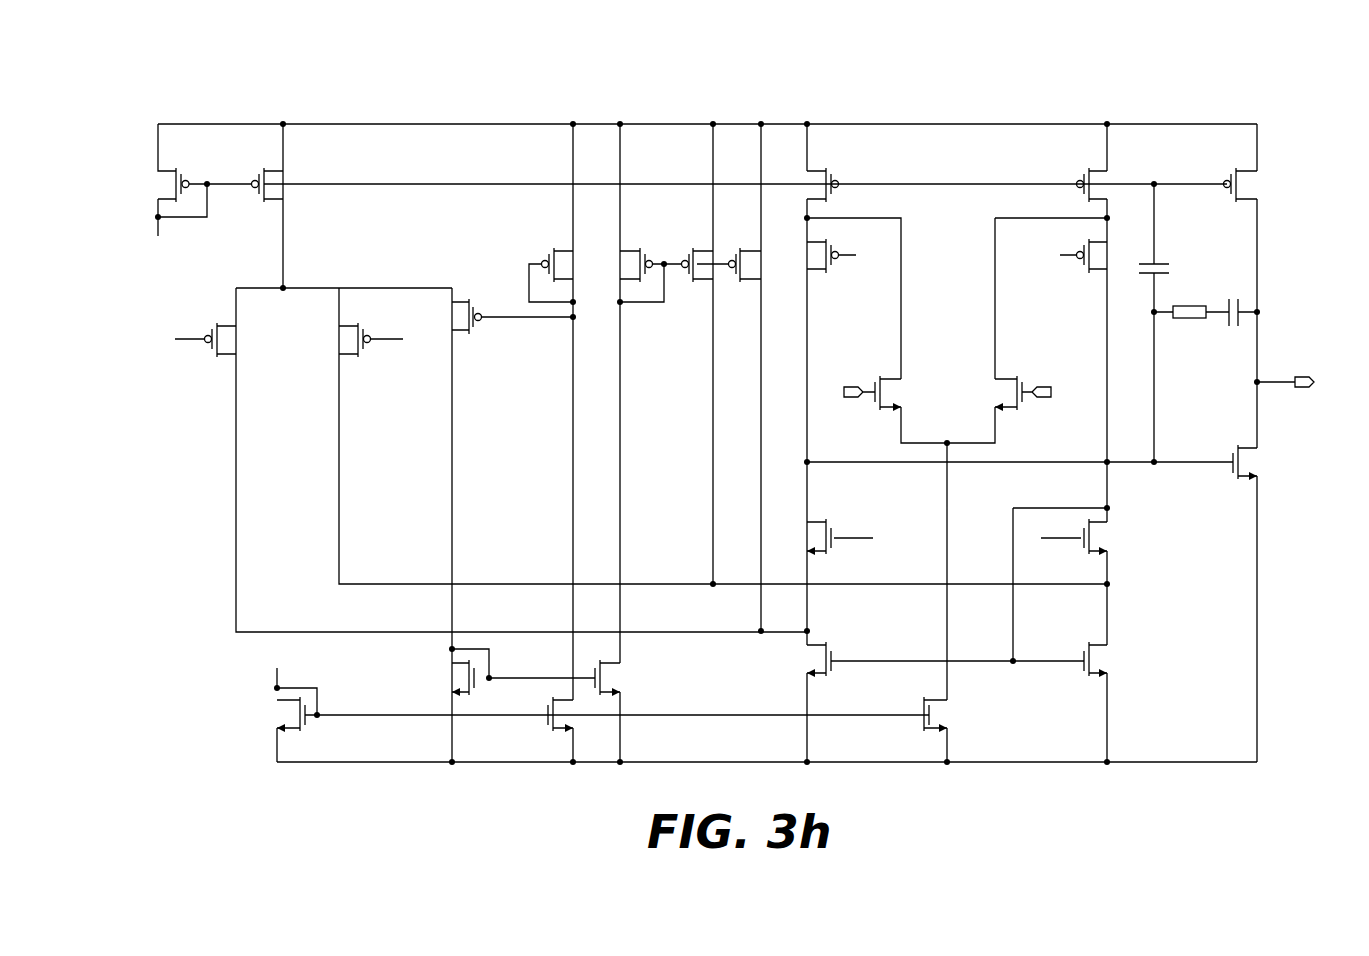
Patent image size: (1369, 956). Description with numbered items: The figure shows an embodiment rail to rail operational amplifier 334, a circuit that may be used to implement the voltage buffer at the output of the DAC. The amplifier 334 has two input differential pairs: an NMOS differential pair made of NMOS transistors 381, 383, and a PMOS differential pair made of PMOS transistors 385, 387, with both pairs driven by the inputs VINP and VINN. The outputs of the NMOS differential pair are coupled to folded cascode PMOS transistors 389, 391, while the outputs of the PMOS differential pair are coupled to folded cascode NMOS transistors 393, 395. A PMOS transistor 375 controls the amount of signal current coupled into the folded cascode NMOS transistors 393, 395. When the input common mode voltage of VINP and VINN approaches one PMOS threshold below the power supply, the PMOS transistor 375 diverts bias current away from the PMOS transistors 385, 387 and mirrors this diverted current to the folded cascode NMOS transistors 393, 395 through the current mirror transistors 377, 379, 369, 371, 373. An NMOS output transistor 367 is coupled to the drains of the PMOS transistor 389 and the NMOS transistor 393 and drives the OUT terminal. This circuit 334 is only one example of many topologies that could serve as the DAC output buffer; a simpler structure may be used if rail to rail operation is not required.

The rail to rail operational amplifier 334 is at (108, 52).
The NMOS output transistor 367 is at (1253, 462).
The current mirror transistor 369 is at (625, 266).
The current mirror transistor 371 is at (701, 250).
The current mirror transistor 373 is at (753, 250).
The PMOS transistor 375 is at (462, 338).
The current mirror transistor 377 is at (450, 688).
The current mirror transistor 379 is at (617, 681).
The NMOS transistor 381 is at (898, 392).
The NMOS transistor 383 is at (1000, 378).
The PMOS transistor 385 is at (222, 358).
The PMOS transistor 387 is at (345, 341).
The folded cascode PMOS transistor 389 is at (820, 272).
The folded cascode PMOS transistor 391 is at (1081, 272).
The folded cascode NMOS transistor 393 is at (822, 521).
The folded cascode NMOS transistor 395 is at (1109, 535).